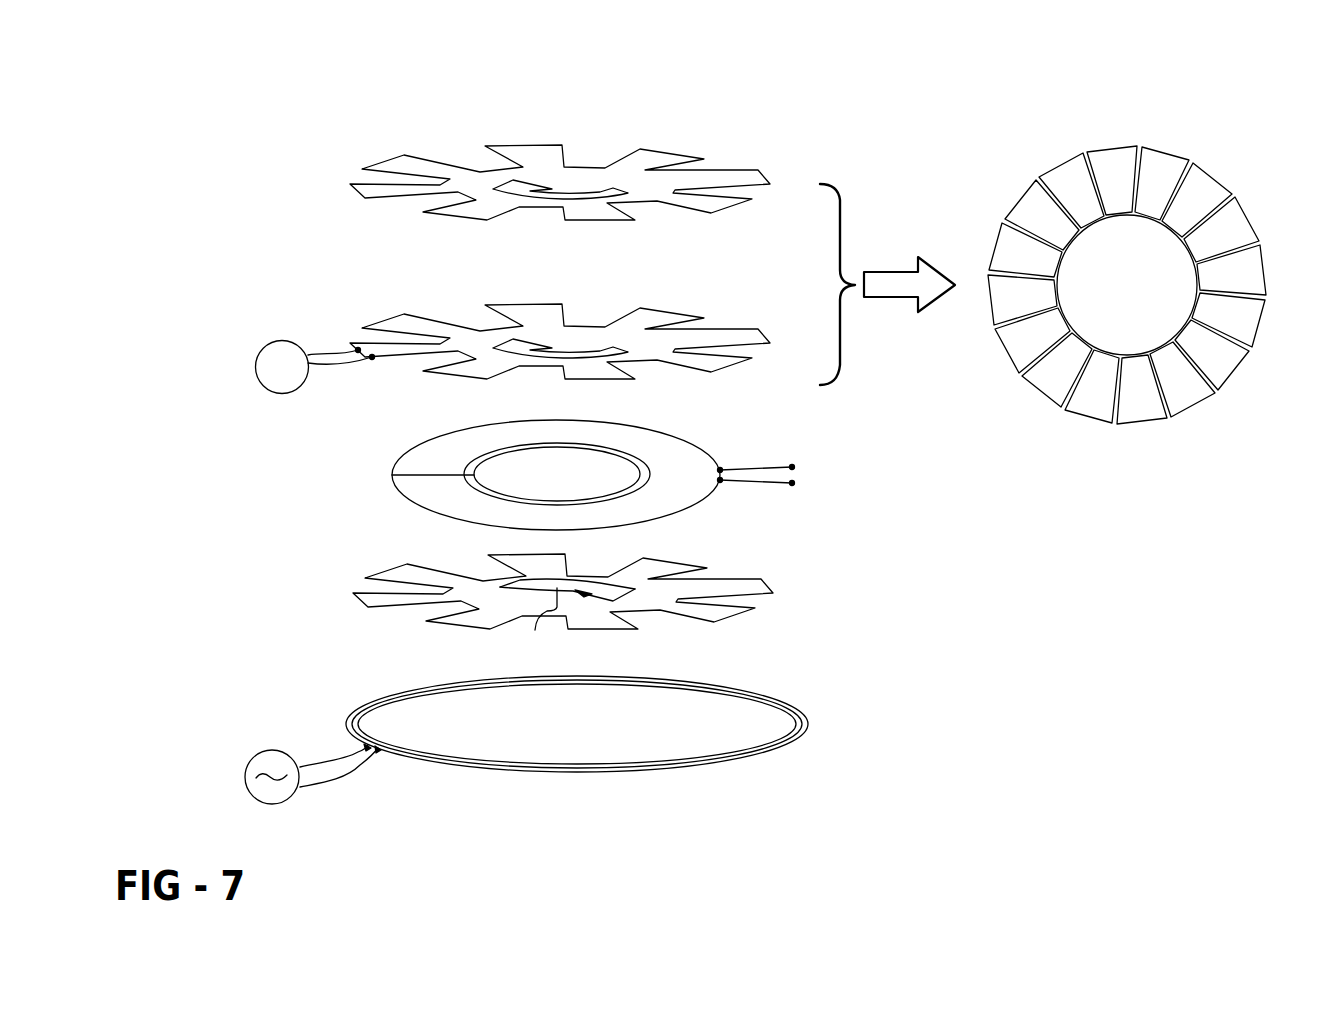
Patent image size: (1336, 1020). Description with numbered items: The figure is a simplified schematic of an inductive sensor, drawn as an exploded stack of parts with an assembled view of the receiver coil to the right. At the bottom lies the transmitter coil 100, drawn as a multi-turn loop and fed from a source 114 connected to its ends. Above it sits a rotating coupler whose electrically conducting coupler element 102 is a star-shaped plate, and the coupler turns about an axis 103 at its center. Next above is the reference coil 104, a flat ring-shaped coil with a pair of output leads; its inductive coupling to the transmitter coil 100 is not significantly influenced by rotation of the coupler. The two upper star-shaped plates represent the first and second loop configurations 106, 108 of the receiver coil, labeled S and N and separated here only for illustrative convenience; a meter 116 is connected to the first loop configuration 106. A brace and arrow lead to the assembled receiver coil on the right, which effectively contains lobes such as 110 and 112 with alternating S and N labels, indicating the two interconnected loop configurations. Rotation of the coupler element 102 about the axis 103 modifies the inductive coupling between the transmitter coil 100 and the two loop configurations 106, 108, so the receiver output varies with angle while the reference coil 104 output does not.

The transmitter coil 100 is at (748, 757).
The coupler element 102 is at (743, 613).
The rotating coupler axis 103 is at (538, 621).
The reference coil 104 is at (697, 505).
The first loop configuration 106 is at (635, 379).
The second loop configuration 108 is at (738, 170).
The lobe 110 is at (1127, 241).
The lobe 112 is at (1115, 160).
The AC source 114 is at (278, 803).
The voltmeter 116 is at (298, 392).